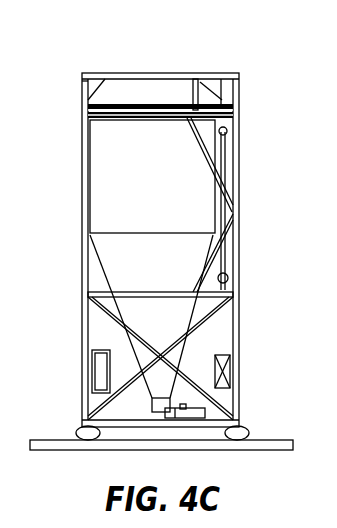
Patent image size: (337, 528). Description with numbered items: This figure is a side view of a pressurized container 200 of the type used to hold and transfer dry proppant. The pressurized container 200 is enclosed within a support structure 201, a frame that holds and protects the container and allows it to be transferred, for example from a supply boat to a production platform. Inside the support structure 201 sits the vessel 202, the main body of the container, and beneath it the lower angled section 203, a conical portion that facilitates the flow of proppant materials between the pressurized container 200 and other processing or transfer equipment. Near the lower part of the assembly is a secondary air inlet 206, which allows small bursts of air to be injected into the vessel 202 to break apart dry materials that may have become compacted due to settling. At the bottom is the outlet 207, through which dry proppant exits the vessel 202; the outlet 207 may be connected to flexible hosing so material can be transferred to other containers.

The pressurized container 200 is at (110, 52).
The support structure 201 is at (200, 73).
The vessel 202 is at (183, 216).
The lower angled section 203 is at (183, 322).
The secondary air inlet 206 is at (231, 373).
The outlet 207 is at (213, 402).